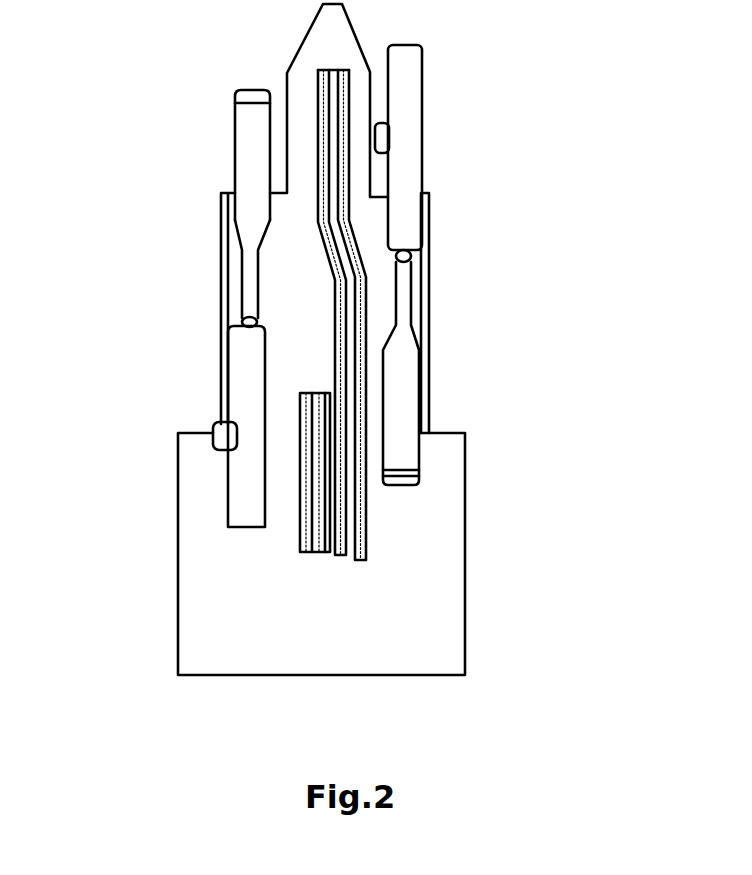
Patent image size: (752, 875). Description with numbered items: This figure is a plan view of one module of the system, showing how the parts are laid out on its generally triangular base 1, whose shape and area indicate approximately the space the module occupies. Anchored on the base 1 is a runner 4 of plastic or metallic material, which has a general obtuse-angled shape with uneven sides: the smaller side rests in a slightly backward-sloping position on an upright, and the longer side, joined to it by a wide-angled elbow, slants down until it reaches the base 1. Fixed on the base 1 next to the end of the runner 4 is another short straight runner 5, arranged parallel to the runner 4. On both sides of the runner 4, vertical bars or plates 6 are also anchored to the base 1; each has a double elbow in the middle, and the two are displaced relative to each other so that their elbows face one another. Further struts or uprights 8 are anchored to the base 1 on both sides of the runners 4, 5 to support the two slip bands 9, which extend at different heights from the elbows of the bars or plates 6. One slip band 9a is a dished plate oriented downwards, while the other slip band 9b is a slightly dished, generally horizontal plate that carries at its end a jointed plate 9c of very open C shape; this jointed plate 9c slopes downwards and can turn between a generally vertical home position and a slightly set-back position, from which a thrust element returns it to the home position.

The base 1 is at (198, 647).
The runner 4 is at (348, 494).
The short straight runner 5 is at (310, 533).
The vertical bars or plates 6 is at (252, 320).
The struts or uprights 8 is at (220, 442).
The slip bands 9 is at (327, 286).
The dished plate 9a is at (247, 412).
The slightly dished plate 9b is at (243, 188).
The jointed plate 9c is at (235, 95).